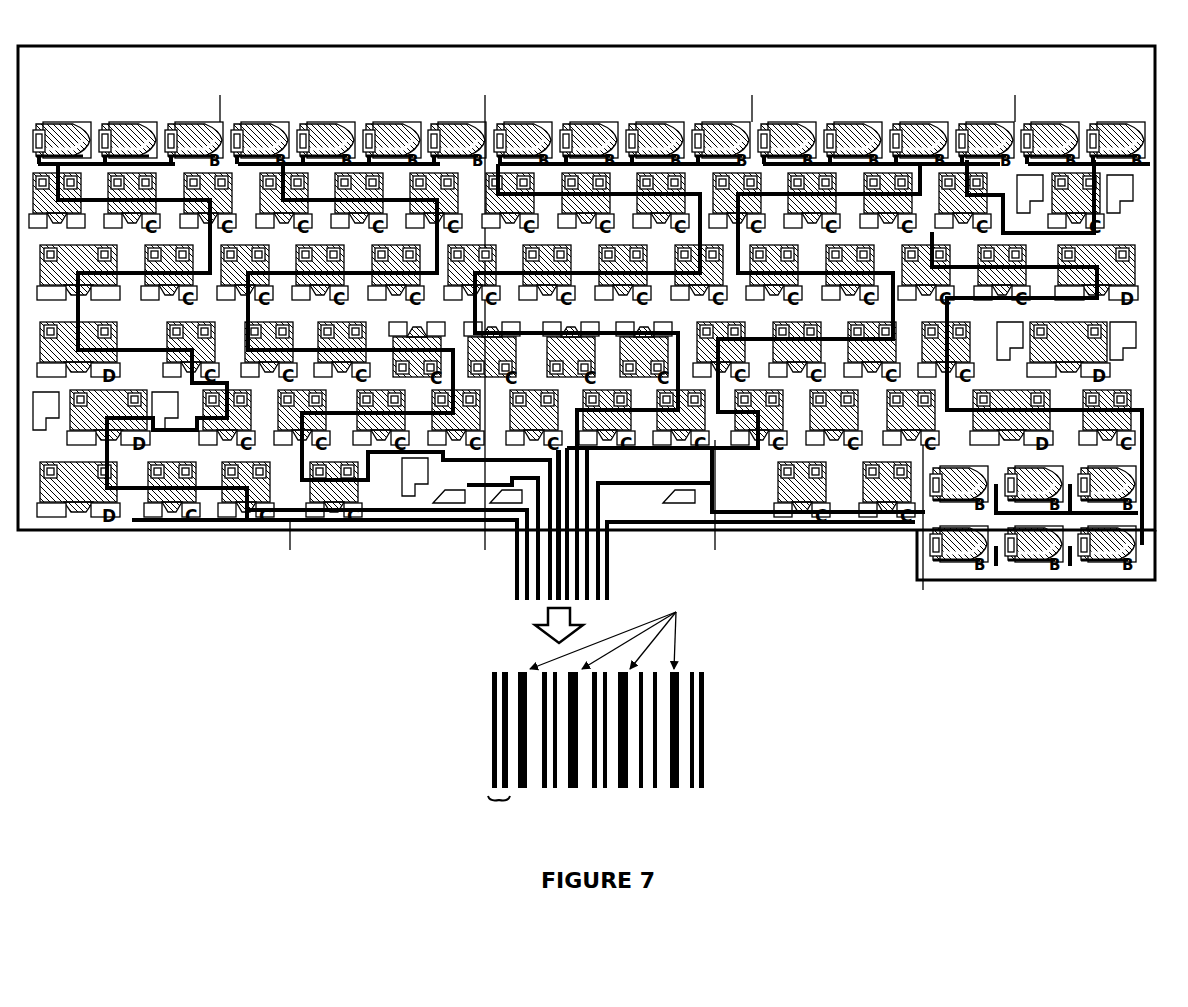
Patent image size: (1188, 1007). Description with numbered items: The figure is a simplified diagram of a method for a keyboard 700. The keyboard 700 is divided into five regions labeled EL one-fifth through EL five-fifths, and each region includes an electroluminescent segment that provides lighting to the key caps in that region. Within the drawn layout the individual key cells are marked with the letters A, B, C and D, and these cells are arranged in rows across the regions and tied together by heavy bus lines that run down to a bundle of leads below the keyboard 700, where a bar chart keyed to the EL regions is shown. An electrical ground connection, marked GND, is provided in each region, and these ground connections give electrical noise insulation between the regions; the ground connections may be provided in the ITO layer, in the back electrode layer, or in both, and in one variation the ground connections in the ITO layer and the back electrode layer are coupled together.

The keyboard 700 is at (985, 63).
The electroluminescent lamp segment type A is at (62, 146).
The electroluminescent lamp segment type B is at (128, 146).
The electroluminescent lamp segment type C is at (57, 205).
The electroluminescent lamp segment type D is at (78, 277).